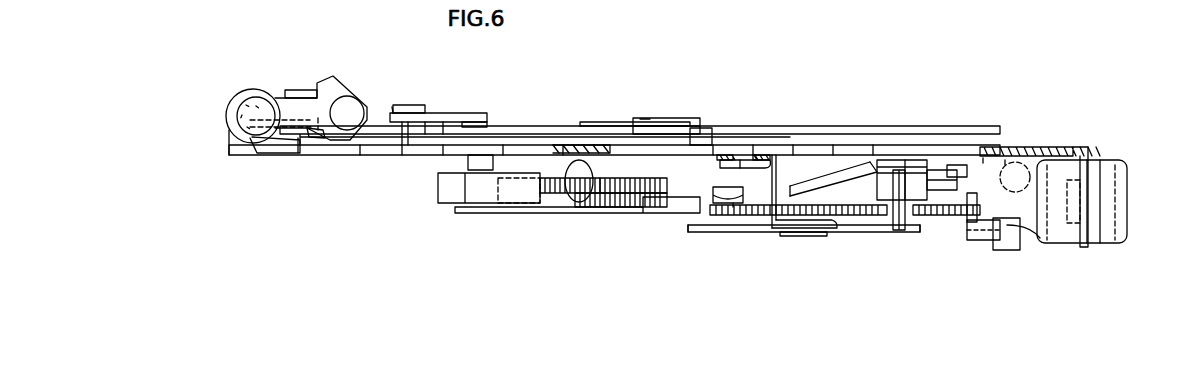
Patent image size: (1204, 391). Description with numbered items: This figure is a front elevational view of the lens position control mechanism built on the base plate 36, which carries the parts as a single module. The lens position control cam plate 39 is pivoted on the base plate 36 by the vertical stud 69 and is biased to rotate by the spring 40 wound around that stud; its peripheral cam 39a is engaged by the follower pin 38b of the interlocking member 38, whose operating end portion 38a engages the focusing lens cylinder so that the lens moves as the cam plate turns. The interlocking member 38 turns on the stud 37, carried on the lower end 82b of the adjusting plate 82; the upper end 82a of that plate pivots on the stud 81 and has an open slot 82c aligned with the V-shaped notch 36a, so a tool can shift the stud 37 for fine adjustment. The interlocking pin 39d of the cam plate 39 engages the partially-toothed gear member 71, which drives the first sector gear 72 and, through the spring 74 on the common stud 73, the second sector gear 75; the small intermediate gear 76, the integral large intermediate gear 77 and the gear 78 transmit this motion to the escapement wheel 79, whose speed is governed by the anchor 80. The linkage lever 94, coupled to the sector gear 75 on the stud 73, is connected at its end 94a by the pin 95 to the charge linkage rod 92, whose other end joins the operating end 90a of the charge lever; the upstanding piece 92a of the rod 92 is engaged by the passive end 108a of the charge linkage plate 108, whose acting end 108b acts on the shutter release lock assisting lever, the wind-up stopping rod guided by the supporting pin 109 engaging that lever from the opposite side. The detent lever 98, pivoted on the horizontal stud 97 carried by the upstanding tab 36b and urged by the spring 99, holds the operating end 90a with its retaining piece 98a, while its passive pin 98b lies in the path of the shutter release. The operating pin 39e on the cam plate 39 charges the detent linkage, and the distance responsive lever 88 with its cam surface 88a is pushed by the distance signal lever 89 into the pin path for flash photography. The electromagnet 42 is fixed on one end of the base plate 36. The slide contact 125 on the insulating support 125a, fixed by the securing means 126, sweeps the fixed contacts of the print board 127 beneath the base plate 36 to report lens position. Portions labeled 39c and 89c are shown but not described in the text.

The base plate 36 is at (930, 148).
The V-shaped notch 36a is at (725, 154).
The upstanding tab 36b is at (230, 144).
The vertical stud 37 is at (803, 236).
The interlocking member 38 is at (762, 232).
The operating end portion 38a is at (697, 232).
The follower pin 38b is at (900, 232).
The lens position control cam plate 39 is at (865, 214).
The peripheral cam 39a is at (1002, 165).
The rack portion 39c is at (1005, 160).
The interlocking pin 39d is at (970, 222).
The operating pin 39e is at (983, 162).
The spring 40 is at (957, 166).
The electromagnet 42 is at (1110, 205).
The vertical stud 69 is at (890, 168).
The partially-toothed gear member 71 is at (918, 216).
The first sector gear 72 is at (740, 210).
The stud 73 is at (700, 129).
The spring 74 is at (725, 196).
The second sector gear 75 is at (670, 214).
The small diameter intermediate gear 76 is at (620, 195).
The large diameter intermediate gear 77 is at (600, 208).
The gear 78 is at (550, 205).
The escapement wheel 79 is at (497, 207).
The anchor 80 is at (445, 185).
The vertical stud 81 is at (775, 158).
The adjusting plate 82 is at (762, 166).
The upper end 82a is at (745, 161).
The lower end 82b is at (835, 228).
The open slot 82c is at (758, 155).
The distance responsive lever 88 is at (985, 240).
The cam surface 88a is at (1035, 148).
The distance signal lever 89 is at (1008, 250).
The actuator arm 89c is at (1040, 238).
The operating end 90a is at (290, 152).
The charge linkage rod 92 is at (563, 127).
The upstanding piece 92a is at (415, 105).
The linkage lever 94 is at (665, 119).
The end of linkage lever 94a is at (625, 122).
The pin 95 is at (640, 119).
The horizontal stud 97 is at (258, 110).
The detent lever 98 is at (330, 85).
The retaining piece 98a is at (320, 140).
The passive pin 98b is at (352, 107).
The spring 99 is at (285, 91).
The charge linkage plate 108 is at (455, 113).
The passive end 108a is at (392, 107).
The acting end 108b is at (487, 124).
The supporting pin 109 is at (427, 137).
The slide contact 125 is at (860, 170).
The insulating support 125a is at (840, 178).
The securing means 126 is at (810, 184).
The print board 127 is at (905, 170).